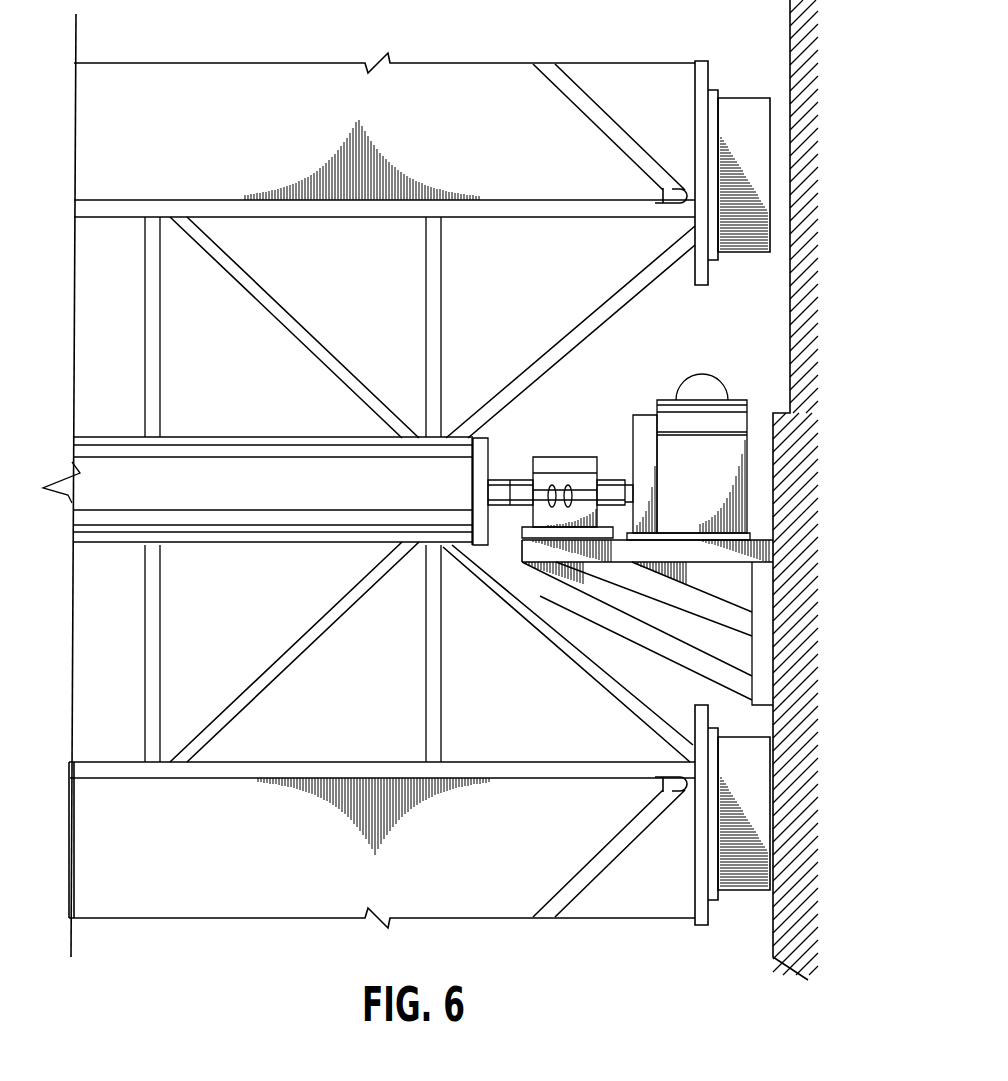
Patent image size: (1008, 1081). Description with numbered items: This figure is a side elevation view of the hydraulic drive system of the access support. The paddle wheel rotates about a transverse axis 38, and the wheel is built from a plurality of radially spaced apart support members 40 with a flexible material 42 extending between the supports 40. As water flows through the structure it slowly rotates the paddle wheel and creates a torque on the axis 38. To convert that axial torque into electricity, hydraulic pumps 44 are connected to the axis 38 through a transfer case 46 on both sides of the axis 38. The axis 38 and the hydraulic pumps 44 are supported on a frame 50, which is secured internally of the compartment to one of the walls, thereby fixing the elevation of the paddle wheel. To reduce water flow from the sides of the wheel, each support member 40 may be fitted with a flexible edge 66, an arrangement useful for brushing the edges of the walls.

The axis 38 is at (332, 501).
The support member 40 is at (710, 72).
The flexible material 42 is at (332, 106).
The hydraulic pump 44 is at (705, 465).
The transfer case 46 is at (643, 433).
The frame 50 is at (705, 658).
The flexible edge 66 is at (753, 163).